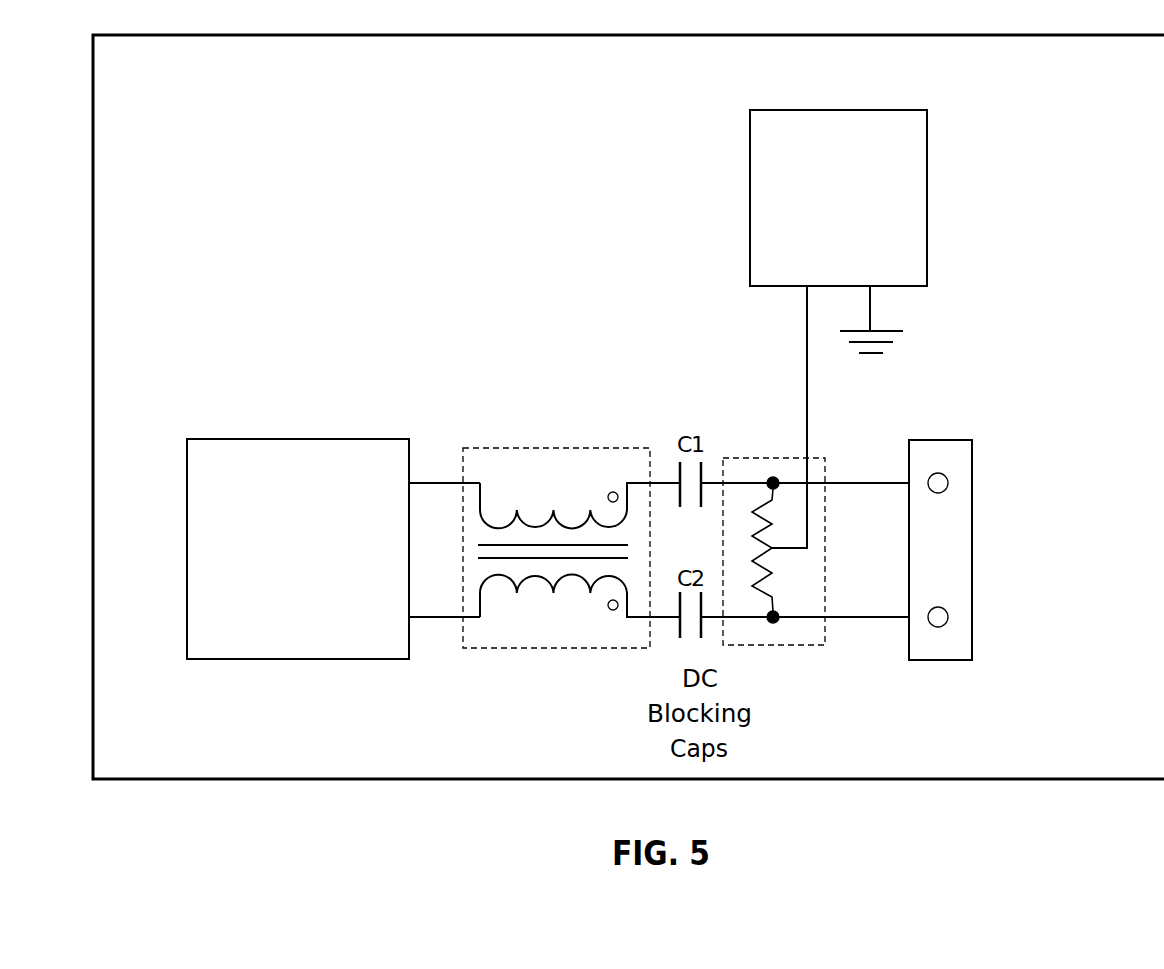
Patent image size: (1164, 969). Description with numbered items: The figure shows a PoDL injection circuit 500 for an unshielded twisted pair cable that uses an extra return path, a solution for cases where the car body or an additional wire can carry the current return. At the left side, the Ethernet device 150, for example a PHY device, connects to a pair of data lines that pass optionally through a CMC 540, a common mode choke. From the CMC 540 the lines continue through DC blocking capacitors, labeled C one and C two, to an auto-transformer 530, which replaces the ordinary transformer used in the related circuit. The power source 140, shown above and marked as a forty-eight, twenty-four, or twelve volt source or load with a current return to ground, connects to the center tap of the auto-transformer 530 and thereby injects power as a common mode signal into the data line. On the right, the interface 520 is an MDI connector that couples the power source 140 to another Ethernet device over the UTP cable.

The PoDL injection circuit 500 is at (176, 84).
The Ethernet device 150 is at (218, 437).
The CMC 540 is at (497, 452).
The auto-transformer 530 is at (757, 458).
The power source 140 is at (785, 107).
The interface 520 is at (968, 468).